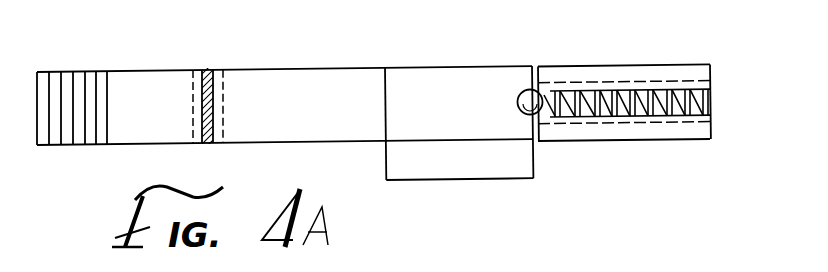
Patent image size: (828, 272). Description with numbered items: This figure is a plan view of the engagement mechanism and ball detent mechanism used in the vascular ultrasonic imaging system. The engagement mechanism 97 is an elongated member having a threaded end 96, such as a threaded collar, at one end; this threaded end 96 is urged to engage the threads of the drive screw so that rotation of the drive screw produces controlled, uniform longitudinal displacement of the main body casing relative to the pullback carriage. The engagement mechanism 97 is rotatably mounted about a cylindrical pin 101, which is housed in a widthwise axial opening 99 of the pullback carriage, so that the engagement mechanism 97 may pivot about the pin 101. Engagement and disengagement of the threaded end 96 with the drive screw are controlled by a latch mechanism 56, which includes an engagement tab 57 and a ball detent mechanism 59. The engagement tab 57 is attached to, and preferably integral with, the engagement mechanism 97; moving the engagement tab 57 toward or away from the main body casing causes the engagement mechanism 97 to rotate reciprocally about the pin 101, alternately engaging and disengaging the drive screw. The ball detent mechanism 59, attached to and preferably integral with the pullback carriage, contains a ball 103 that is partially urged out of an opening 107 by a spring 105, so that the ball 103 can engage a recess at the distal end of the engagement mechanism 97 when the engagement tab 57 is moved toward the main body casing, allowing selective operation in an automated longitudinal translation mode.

The latch mechanism 56 is at (565, 158).
The engagement tab 57 is at (482, 162).
The ball detent mechanism 59 is at (620, 81).
The threaded end 96 is at (83, 88).
The engagement mechanism 97 is at (318, 92).
The widthwise axial opening 99 is at (193, 110).
The cylindrical pin 101 is at (206, 70).
The ball 103 is at (526, 98).
The spring 105 is at (678, 88).
The opening 107 is at (697, 122).